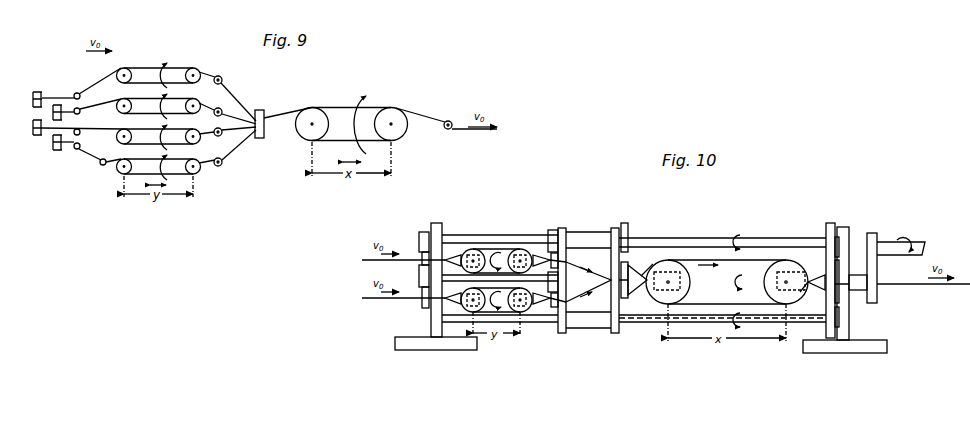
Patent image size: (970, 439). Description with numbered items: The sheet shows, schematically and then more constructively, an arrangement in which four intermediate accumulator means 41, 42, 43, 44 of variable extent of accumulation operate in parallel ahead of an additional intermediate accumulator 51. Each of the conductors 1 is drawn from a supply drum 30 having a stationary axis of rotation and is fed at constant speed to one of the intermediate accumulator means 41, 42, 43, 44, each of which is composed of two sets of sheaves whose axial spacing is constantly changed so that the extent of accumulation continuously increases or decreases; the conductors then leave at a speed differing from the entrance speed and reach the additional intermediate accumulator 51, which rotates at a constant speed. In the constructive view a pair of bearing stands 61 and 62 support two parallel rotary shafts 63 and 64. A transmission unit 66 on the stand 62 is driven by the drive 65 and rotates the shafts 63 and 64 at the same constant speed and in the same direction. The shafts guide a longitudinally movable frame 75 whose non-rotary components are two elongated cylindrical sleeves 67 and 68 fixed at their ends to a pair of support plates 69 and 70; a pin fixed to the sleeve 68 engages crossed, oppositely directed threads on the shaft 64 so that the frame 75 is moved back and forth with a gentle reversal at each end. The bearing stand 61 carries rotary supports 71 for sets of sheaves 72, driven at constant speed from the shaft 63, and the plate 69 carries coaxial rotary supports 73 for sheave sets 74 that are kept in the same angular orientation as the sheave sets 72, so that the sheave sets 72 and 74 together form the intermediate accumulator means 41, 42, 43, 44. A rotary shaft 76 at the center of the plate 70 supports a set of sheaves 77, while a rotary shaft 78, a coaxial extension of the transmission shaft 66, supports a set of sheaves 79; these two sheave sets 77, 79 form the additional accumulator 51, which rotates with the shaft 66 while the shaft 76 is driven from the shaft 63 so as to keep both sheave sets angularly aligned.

In FIG. 9, the conductors 1 is at (103, 102).
In FIG. 10, the conductors 1 is at (372, 262).
In FIG. 9, the supply drums 30 is at (56, 105).
In FIG. 9, the intermediate accumulator means 41 is at (195, 72).
In FIG. 10, the intermediate accumulator means 41 is at (527, 247).
In FIG. 9, the intermediate accumulator means 42 is at (195, 103).
In FIG. 10, the intermediate accumulator means 42 is at (522, 305).
In FIG. 9, the intermediate accumulator means 43 is at (197, 140).
In FIG. 9, the intermediate accumulator means 44 is at (198, 170).
In FIG. 9, the additional intermediate accumulator 51 is at (394, 117).
In FIG. 10, the additional intermediate accumulator 51 is at (790, 263).
In FIG. 10, the bearing stand 61 is at (437, 350).
In FIG. 10, the bearing stand 62 is at (843, 353).
In FIG. 10, the shaft 63 is at (695, 242).
In FIG. 10, the shaft 64 is at (657, 323).
In FIG. 10, the drive 65 is at (888, 248).
In FIG. 10, the transmission unit 66 is at (858, 276).
In FIG. 10, the guide sleeve 67 is at (593, 242).
In FIG. 10, the guide sleeve 68 is at (602, 323).
In FIG. 10, the support plate 69 is at (563, 228).
In FIG. 10, the support plate 70 is at (613, 228).
In FIG. 10, the supports 71 is at (455, 257).
In FIG. 10, the sets of sheaves 72 is at (473, 249).
In FIG. 10, the rotary supports 73 is at (542, 257).
In FIG. 10, the sheave sets 74 is at (518, 252).
In FIG. 10, the frame 75 is at (582, 323).
In FIG. 10, the rotary shaft 76 is at (640, 276).
In FIG. 10, the set of sheaves 77 is at (668, 282).
In FIG. 10, the rotary shaft 78 is at (817, 276).
In FIG. 10, the set of sheaves 79 is at (773, 272).